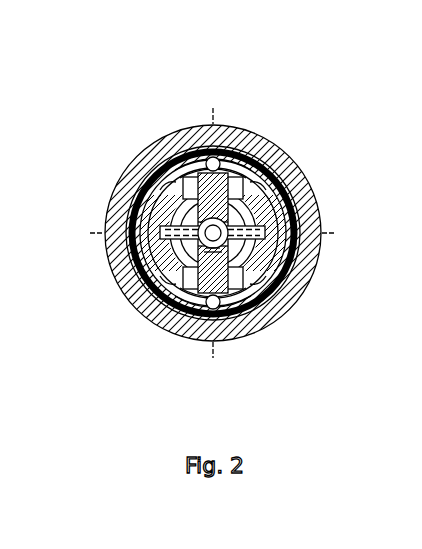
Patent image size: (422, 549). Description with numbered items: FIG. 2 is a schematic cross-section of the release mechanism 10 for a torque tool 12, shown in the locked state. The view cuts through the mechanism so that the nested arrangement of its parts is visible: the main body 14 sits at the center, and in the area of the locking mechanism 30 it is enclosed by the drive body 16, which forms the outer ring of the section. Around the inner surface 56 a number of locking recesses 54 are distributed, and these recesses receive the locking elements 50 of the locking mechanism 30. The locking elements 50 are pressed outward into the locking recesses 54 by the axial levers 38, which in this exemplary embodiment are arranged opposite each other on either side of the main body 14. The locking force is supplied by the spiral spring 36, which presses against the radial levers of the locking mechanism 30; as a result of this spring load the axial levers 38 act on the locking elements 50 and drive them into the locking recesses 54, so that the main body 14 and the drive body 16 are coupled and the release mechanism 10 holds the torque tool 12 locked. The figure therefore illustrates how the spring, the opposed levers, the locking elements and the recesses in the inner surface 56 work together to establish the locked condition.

The release mechanism 10 is at (250, 196).
The torque tool 12 is at (250, 233).
The main body 14 is at (192, 240).
The drive body 16 is at (269, 233).
The locking mechanism 30 is at (197, 192).
The spiral spring 36 is at (160, 234).
The axial levers 38 is at (289, 230).
The locking elements 50 is at (210, 219).
The locking recesses 54 is at (259, 240).
The inner surface 56 is at (143, 238).